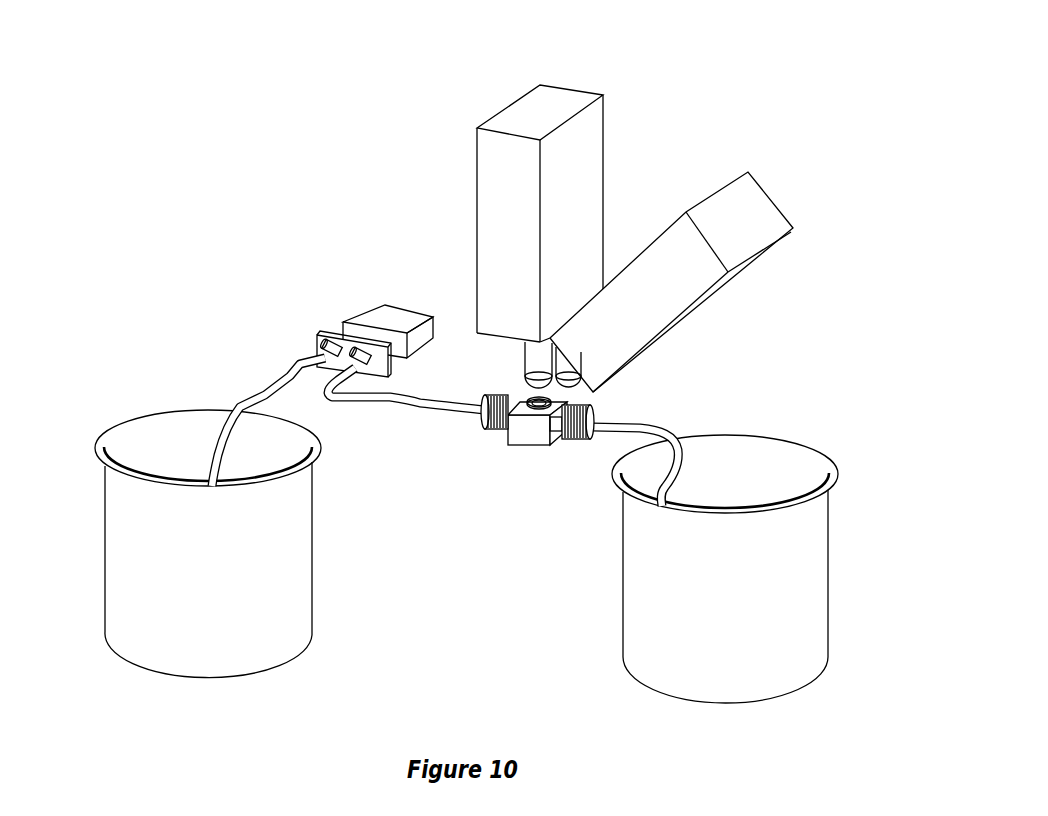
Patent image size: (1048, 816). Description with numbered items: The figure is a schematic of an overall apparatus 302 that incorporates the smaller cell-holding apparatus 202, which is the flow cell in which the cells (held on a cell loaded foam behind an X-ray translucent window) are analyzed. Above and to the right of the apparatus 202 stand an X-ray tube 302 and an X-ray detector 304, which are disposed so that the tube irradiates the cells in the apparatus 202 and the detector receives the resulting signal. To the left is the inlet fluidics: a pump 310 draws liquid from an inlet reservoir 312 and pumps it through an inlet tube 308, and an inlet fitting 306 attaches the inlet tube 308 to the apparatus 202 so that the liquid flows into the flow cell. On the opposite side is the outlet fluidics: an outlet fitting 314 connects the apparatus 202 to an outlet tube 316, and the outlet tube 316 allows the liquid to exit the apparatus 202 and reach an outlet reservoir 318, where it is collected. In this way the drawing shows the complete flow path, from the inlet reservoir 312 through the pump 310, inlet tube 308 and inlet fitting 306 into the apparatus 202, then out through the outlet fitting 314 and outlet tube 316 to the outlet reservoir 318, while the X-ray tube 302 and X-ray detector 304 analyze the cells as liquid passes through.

The X-ray tube 302 is at (557, 88).
The X-ray detector 304 is at (640, 105).
The pump 310 is at (360, 318).
The inlet reservoir 312 is at (172, 418).
The inlet tube 308 is at (317, 402).
The inlet fitting 306 is at (483, 433).
The apparatus 202 is at (530, 448).
The outlet fitting 314 is at (596, 398).
The outlet tube 316 is at (677, 432).
The outlet reservoir 318 is at (835, 567).